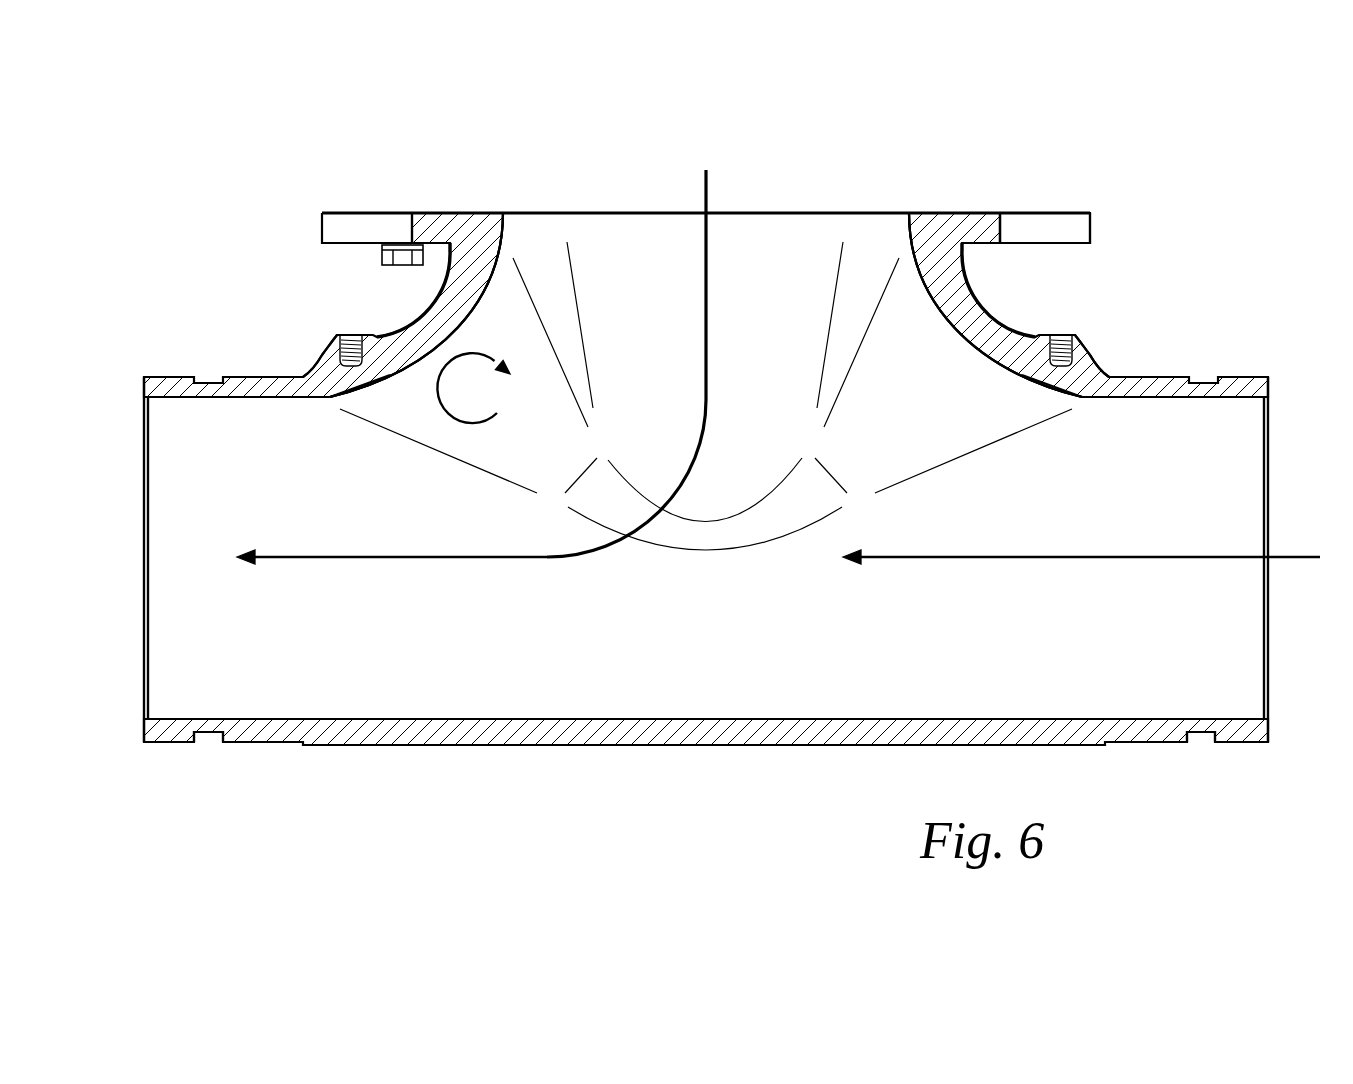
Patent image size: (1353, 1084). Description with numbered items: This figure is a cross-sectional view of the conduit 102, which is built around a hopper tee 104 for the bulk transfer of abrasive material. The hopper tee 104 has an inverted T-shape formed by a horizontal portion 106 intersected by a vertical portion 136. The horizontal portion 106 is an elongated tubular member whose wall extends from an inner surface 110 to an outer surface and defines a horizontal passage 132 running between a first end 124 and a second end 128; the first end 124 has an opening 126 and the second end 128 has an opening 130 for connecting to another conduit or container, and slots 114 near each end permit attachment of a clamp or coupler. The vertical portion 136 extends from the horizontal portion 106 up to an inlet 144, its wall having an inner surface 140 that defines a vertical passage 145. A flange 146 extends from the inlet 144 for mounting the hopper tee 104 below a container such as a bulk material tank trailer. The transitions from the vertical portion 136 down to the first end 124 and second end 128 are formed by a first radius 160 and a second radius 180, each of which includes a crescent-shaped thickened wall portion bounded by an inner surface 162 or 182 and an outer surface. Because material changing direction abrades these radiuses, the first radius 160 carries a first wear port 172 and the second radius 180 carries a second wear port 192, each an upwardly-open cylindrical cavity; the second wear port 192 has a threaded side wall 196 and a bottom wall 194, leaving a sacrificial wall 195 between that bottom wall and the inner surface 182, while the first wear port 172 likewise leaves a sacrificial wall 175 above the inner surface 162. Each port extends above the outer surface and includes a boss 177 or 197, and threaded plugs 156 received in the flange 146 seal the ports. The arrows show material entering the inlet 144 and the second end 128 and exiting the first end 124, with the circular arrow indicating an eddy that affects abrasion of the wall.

The conduit 102 is at (1107, 143).
The hopper tee 104 is at (727, 745).
The horizontal portion 106 is at (337, 793).
The inner surface 110 is at (520, 632).
The slots 114 is at (200, 742).
The first end 124 is at (144, 377).
The opening 126 is at (144, 518).
The second end 128 is at (1268, 377).
The opening 130 is at (1268, 500).
The horizontal passage 132 is at (418, 693).
The vertical portion 136 is at (1045, 290).
The inner surface 140 is at (778, 342).
The inlet 144 is at (910, 228).
The vertical passage 145 is at (399, 307).
The flange 146 is at (1090, 214).
The threaded plug 156 is at (382, 258).
The first radius 160 is at (369, 285).
The inner surface 162 is at (496, 310).
The first wear port 172 is at (336, 337).
The sacrificial wall 175 is at (364, 386).
The boss 177 is at (326, 352).
The second radius 180 is at (1031, 276).
The inner surface 182 is at (930, 338).
The second wear port 192 is at (1074, 338).
The bottom wall 194 is at (1050, 368).
The sacrificial wall 195 is at (1066, 382).
The threaded side wall 196 is at (1080, 350).
The boss 197 is at (1078, 392).